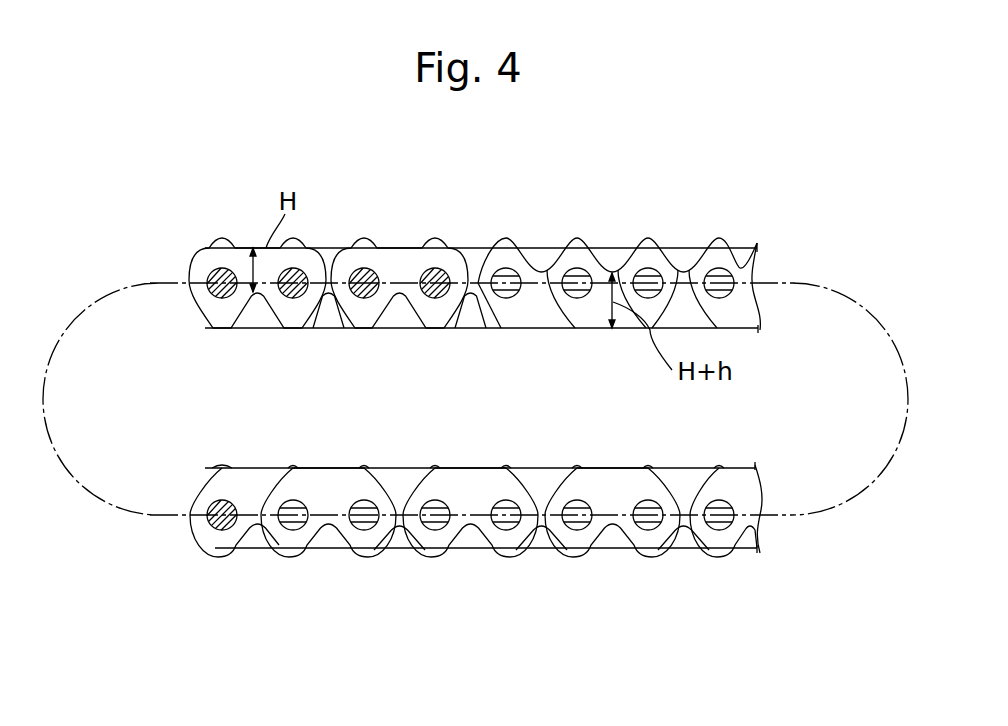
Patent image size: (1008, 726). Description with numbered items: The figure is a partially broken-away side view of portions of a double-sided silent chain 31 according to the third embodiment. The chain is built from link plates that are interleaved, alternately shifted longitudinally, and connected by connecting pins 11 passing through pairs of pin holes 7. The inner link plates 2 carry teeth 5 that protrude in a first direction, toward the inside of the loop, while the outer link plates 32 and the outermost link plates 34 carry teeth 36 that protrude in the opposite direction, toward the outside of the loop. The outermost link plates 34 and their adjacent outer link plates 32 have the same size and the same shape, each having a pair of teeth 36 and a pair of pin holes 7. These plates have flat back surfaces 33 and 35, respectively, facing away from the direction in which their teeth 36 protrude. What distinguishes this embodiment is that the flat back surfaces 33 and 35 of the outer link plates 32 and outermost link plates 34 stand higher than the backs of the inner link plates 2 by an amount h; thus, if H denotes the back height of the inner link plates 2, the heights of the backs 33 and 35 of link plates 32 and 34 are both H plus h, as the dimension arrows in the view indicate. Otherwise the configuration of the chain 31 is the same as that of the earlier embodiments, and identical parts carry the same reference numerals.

The inner link plate 2 is at (240, 248).
The teeth of inner link plates 5 is at (362, 323).
The pin holes 7 is at (211, 294).
The connecting pins 11 is at (746, 247).
The double-sided silent chain 31 is at (678, 230).
The outer link plates 32 is at (400, 319).
The flat back surface of outer link plate 33 is at (543, 330).
The outermost link plates 34 is at (468, 323).
The flat back surface of outermost link plate 35 is at (622, 330).
The teeth of outer and outermost link plates 36 is at (437, 239).